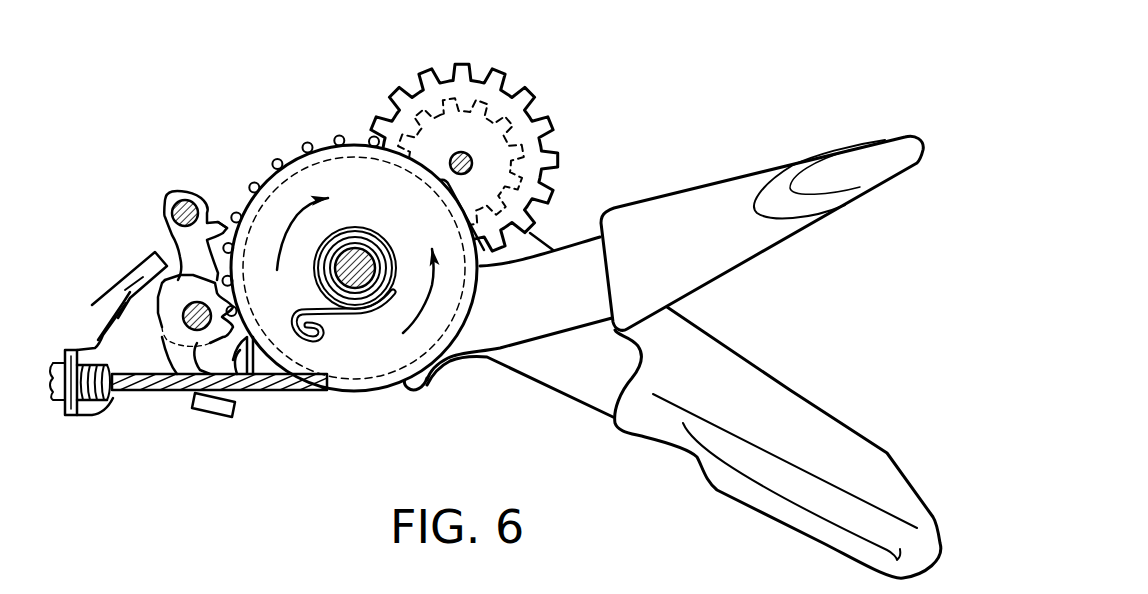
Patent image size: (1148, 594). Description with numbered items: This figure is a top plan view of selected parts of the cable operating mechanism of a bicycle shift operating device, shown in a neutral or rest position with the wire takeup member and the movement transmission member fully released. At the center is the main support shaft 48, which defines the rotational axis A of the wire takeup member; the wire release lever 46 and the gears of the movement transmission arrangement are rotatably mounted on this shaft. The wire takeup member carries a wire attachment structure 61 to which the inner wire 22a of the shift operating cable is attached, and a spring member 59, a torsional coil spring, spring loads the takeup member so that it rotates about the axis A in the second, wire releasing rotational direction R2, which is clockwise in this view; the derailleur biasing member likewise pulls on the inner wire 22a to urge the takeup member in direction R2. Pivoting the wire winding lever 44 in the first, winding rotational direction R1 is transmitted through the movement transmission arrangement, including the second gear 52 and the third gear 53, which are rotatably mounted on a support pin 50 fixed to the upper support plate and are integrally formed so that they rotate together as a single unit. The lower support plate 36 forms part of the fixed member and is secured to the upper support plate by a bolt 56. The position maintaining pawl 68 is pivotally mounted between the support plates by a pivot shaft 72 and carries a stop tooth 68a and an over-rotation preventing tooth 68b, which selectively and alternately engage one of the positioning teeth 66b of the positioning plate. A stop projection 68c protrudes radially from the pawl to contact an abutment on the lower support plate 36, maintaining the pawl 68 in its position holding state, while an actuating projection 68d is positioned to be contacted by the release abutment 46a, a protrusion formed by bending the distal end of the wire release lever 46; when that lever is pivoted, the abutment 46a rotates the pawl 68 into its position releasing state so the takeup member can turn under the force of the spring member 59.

The inner wire 22a is at (280, 391).
The lower support plate 36 is at (94, 344).
The wire winding lever 44 is at (660, 442).
The wire release lever 46 is at (727, 181).
The release abutment 46a is at (203, 408).
The main support shaft 48 is at (355, 266).
The support pin 50 is at (472, 163).
The second gear 52 is at (530, 95).
The third gear 53 is at (555, 128).
The bolt 56 is at (183, 197).
The spring member 59 is at (355, 278).
The wire attachment structure 61 is at (375, 392).
The positioning teeth 66b is at (307, 145).
The position maintaining pawl 68 is at (157, 317).
The stop tooth 68a is at (247, 392).
The over-rotation preventing tooth 68b is at (227, 237).
The stop projection 68c is at (145, 245).
The actuating projection 68d is at (183, 347).
The pivot shaft 72 is at (187, 330).
The first rotational direction R1 is at (428, 333).
The second rotational direction R2 is at (292, 225).
The rotational axis A is at (393, 297).